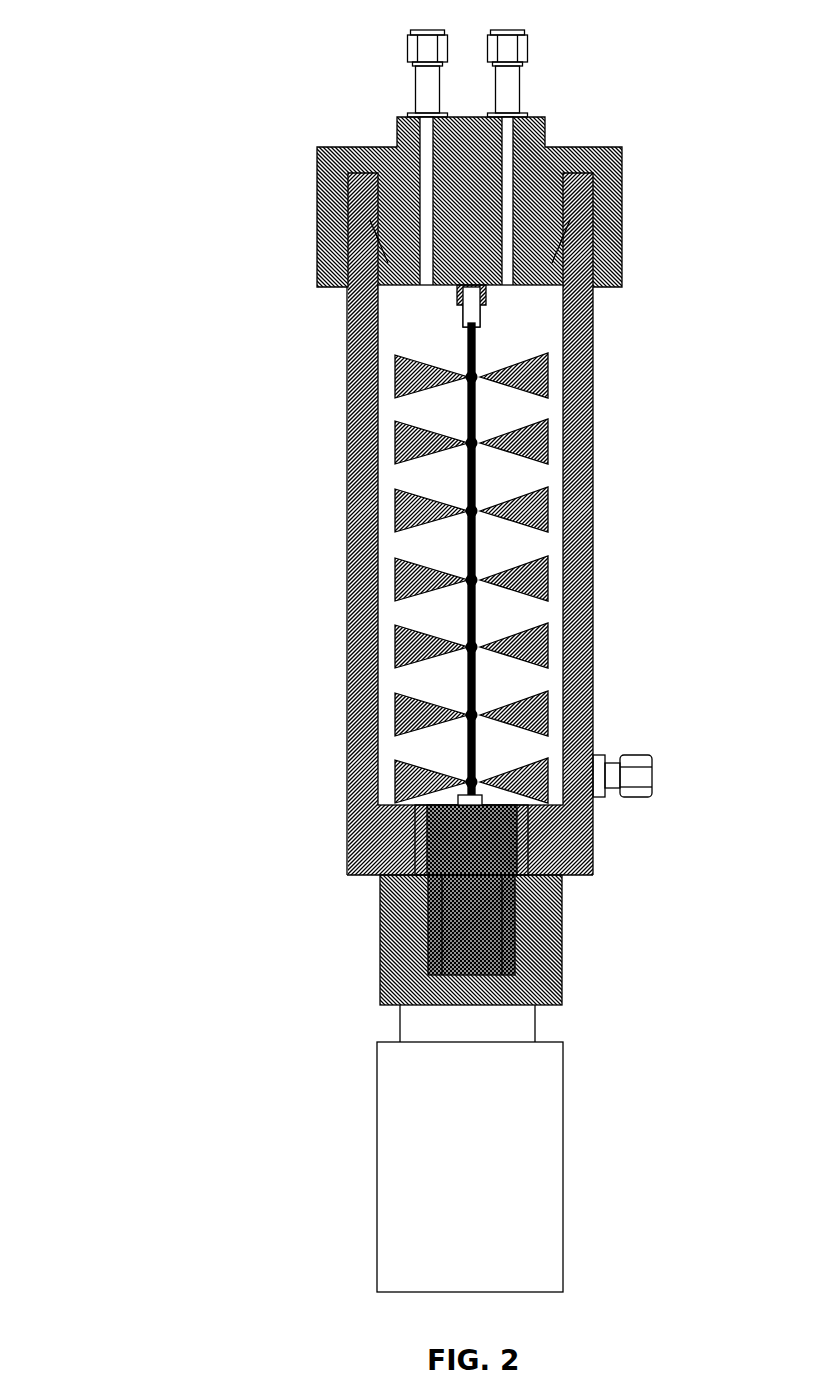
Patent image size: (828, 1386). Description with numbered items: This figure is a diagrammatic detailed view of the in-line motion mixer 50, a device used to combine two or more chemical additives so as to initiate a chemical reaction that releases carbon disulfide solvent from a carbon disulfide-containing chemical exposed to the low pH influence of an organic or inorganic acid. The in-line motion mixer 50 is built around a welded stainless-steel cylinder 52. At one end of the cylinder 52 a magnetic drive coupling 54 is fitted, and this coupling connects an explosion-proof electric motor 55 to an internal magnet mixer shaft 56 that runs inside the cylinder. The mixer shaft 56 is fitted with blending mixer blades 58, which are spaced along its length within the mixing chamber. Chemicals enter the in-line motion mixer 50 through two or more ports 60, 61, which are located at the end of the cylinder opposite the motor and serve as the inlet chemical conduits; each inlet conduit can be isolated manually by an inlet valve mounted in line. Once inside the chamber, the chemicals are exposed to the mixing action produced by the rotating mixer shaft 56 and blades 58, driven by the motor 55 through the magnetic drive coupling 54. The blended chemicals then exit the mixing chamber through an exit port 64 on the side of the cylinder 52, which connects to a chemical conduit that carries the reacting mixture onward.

The in-line motion mixer 50 is at (212, 298).
The welded stainless-steel cylinder 52 is at (347, 515).
The magnetic drive coupling 54 is at (388, 950).
The explosion-proof electric motor 55 is at (489, 1180).
The internal magnet mixer shaft 56 is at (468, 684).
The blending mixer blades 58 is at (543, 517).
The port 60 is at (416, 88).
The port 61 is at (520, 88).
The exit port 64 is at (608, 765).